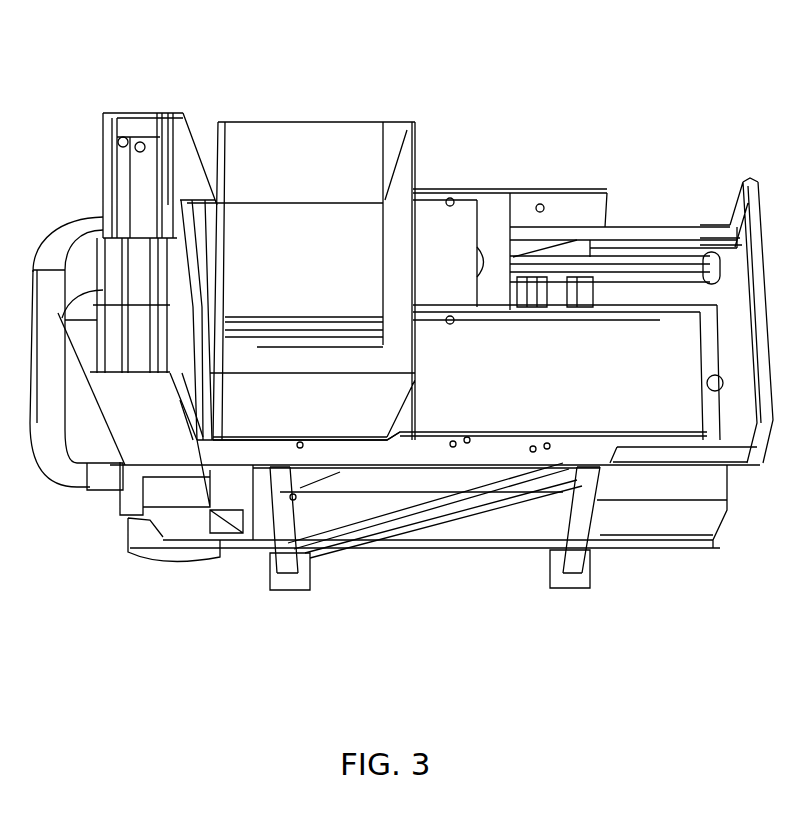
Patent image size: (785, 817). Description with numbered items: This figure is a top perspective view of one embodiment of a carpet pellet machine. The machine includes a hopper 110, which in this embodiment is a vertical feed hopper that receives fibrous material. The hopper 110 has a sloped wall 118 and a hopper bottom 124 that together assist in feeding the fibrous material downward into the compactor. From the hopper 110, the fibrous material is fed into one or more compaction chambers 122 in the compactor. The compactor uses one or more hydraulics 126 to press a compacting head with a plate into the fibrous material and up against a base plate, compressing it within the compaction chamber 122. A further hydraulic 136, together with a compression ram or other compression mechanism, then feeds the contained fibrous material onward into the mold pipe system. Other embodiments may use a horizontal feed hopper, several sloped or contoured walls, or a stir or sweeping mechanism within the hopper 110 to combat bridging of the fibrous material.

The hopper 110 is at (390, 118).
The sloped wall 118 is at (400, 365).
The compaction chamber 122 is at (353, 352).
The hopper bottom 124 is at (357, 243).
The hydraulic 126 is at (615, 263).
The hydraulic 136 is at (133, 180).